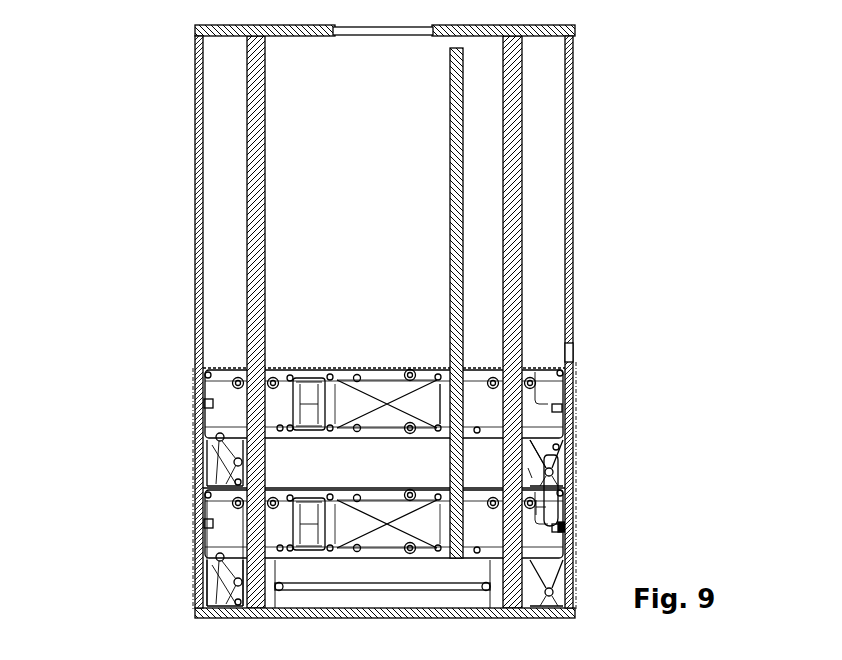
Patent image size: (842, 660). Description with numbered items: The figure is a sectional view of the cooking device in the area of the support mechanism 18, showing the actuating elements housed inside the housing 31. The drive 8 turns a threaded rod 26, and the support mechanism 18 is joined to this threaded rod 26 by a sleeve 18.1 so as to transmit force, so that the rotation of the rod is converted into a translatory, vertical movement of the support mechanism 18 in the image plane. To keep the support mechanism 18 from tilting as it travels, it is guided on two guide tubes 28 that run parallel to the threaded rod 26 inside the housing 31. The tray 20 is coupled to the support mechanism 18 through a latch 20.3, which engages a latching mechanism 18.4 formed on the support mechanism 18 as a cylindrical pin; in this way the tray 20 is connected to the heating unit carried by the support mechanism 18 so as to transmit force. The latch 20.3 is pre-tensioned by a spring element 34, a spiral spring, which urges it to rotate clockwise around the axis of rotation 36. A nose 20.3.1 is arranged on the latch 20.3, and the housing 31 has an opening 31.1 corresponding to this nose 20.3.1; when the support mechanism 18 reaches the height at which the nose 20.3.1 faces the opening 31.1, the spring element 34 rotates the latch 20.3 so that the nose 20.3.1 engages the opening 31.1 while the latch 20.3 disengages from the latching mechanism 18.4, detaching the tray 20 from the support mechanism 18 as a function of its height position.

The drive 8 is at (318, 575).
The support mechanism 18 is at (247, 418).
The sleeve 18.1 is at (440, 406).
The latching mechanism 18.4 is at (528, 473).
The tray 20 is at (242, 534).
The latch 20.3 is at (545, 507).
The nose 20.3.1 is at (556, 447).
The threaded rod 26 is at (457, 160).
The guide tubes 28 is at (260, 135).
The housing 31 is at (197, 200).
The opening 31.1 is at (578, 352).
The spring element 34 is at (566, 528).
The axis of rotation 36 is at (565, 487).